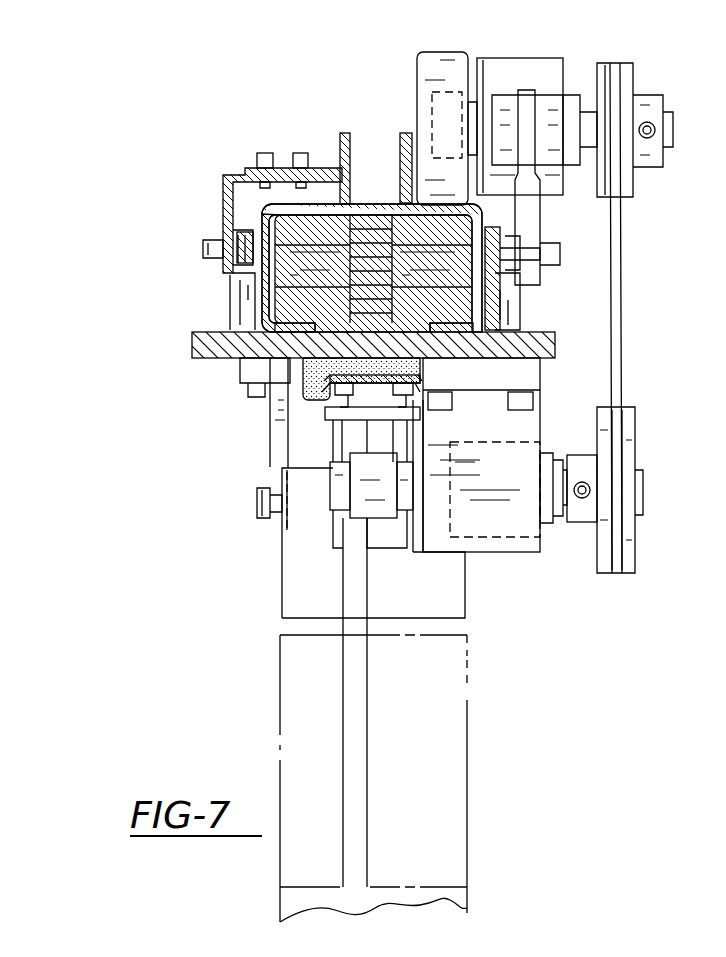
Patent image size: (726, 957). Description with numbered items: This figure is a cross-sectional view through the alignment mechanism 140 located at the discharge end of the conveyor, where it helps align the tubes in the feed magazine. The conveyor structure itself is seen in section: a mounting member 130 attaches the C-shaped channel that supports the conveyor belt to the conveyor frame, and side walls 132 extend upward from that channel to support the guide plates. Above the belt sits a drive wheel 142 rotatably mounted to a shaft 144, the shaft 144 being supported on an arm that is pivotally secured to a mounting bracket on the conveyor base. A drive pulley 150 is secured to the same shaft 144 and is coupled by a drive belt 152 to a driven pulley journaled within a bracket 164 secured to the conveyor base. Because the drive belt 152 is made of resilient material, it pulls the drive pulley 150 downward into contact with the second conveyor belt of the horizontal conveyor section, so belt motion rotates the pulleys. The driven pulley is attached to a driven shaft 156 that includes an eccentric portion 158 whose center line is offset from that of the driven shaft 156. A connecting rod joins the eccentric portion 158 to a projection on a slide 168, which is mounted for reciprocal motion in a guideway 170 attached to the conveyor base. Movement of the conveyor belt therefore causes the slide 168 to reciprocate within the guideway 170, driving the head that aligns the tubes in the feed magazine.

The mounting member 130 is at (272, 206).
The side walls 132 is at (238, 172).
The alignment mechanism 140 is at (262, 527).
The drive wheel 142 is at (428, 70).
The shaft 144 is at (590, 128).
The drive pulley 150 is at (633, 85).
The drive belt 152 is at (618, 305).
The driven shaft 156 is at (635, 540).
The eccentric portion 158 is at (370, 508).
The bracket 164 is at (520, 548).
The slide 168 is at (330, 410).
The guideway 170 is at (305, 372).